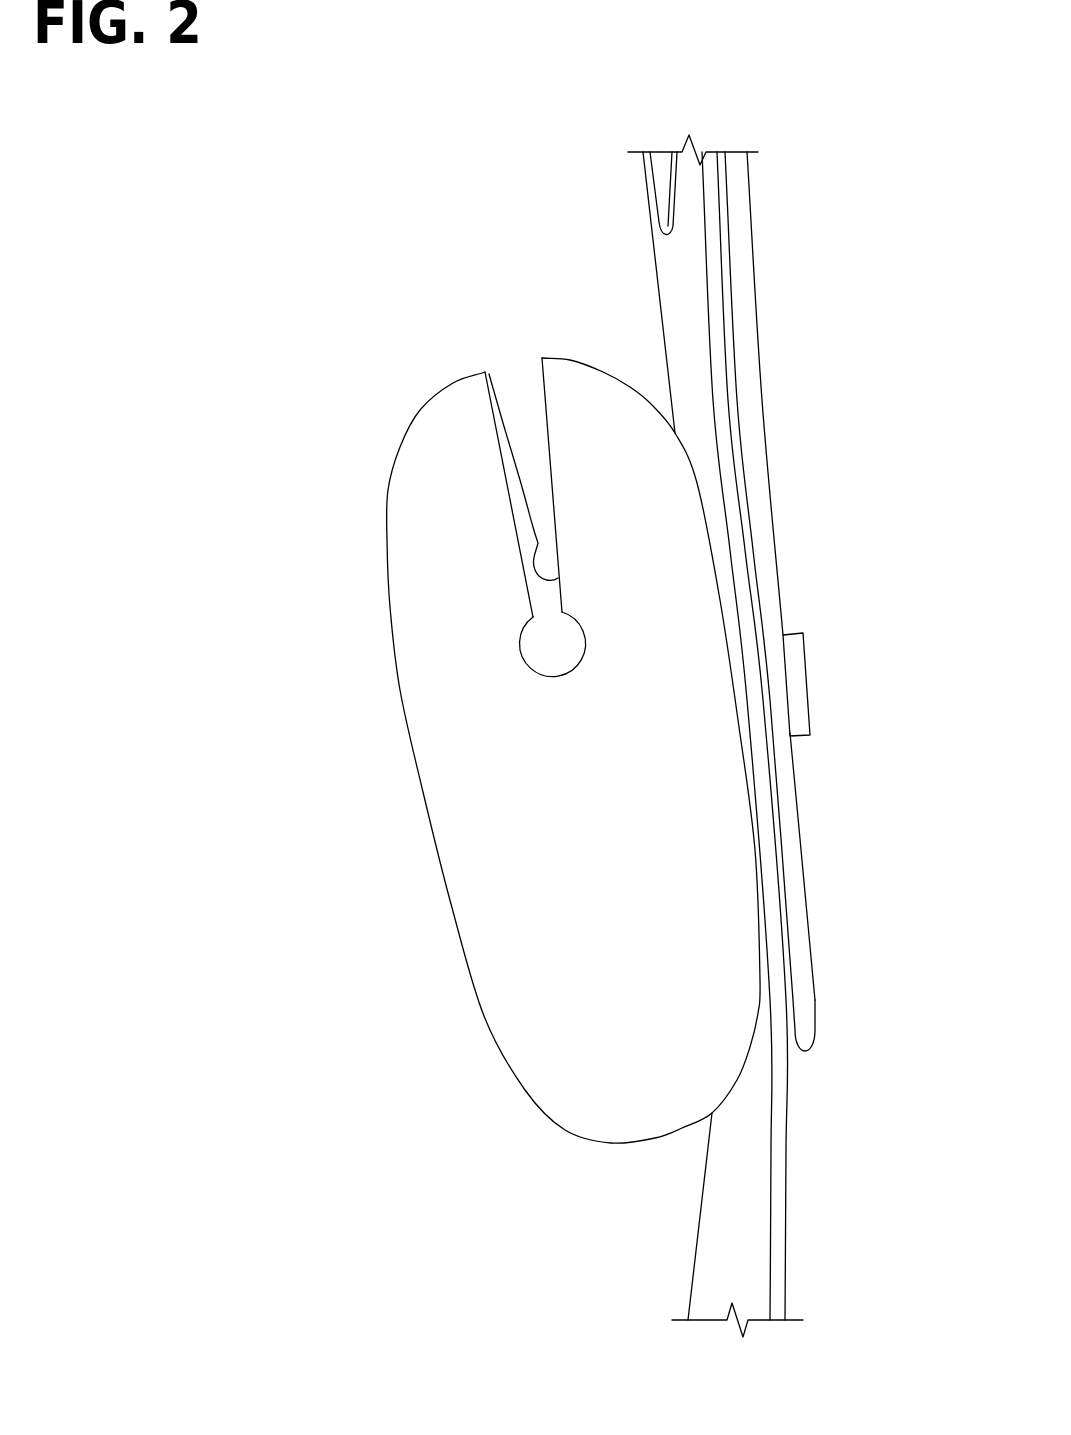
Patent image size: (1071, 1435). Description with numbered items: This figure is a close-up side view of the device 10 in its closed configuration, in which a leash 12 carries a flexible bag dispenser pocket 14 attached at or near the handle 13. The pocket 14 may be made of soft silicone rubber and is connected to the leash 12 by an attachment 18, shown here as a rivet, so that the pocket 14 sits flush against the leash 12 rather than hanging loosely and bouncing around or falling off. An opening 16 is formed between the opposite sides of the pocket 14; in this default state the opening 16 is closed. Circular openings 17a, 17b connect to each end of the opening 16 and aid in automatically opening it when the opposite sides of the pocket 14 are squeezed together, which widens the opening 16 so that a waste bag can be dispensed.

The device 10 is at (275, 342).
The leash 12 is at (790, 1213).
The handle 13 is at (760, 365).
The flexible bag dispenser pocket 14 is at (392, 618).
The opening 16 is at (513, 378).
The circular opening 17a is at (582, 629).
The circular opening 17b is at (540, 562).
The attachment 18 is at (807, 677).